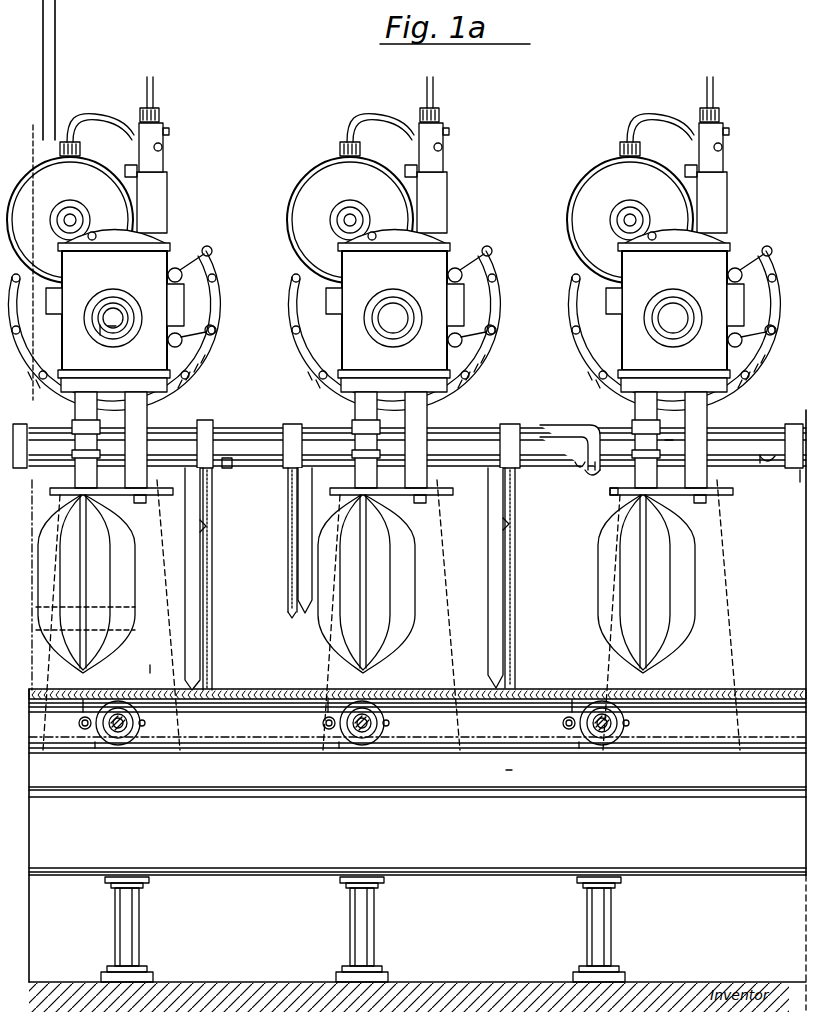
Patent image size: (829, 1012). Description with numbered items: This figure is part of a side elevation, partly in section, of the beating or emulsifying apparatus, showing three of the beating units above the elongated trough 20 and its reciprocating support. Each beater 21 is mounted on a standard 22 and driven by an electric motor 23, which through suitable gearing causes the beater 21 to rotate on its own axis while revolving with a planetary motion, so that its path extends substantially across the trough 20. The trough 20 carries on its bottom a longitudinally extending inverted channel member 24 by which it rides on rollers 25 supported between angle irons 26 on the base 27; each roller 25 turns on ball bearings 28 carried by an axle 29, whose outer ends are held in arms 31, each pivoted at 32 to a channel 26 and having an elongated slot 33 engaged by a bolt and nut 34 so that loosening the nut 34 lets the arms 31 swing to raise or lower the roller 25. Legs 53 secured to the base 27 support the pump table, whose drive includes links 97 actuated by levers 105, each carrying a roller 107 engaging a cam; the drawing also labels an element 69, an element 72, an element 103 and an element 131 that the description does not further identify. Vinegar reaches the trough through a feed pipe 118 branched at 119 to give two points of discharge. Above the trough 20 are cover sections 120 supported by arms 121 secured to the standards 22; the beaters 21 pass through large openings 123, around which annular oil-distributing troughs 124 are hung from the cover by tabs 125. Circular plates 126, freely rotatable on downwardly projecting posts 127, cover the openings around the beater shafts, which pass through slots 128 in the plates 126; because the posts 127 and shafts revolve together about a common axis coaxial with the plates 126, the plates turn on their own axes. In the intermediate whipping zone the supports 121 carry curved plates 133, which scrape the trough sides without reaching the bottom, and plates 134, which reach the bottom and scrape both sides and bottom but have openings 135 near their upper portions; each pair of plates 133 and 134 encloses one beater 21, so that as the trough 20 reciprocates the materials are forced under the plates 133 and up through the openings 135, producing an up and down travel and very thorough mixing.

The trough 20 is at (417, 711).
The beaters 21 is at (107, 593).
The standards 22 is at (183, 655).
The electric motors 23 is at (293, 222).
The inverted channel member 24 is at (523, 707).
The rollers 25 is at (96, 215).
The angle irons 26 is at (238, 733).
The base 27 is at (510, 772).
The ball bearings 28 is at (123, 735).
The axles 29 is at (127, 730).
The arms 31 is at (97, 743).
The pivot 32 is at (146, 723).
The elongated slot 33 is at (83, 742).
The bolt and nut 34 is at (79, 723).
The legs 53 is at (148, 667).
The standard 69 is at (50, 102).
The guide bar 72 is at (48, 680).
The links 97 is at (102, 336).
The sleeve 103 is at (114, 332).
The levers 105 is at (120, 306).
The roller 107 is at (122, 300).
The feed pipe 118 is at (262, 428).
The branch 119 is at (672, 438).
The cover sections 120 is at (228, 468).
The arms 121 is at (90, 455).
The openings 123 is at (75, 462).
The annular troughs 124 is at (612, 487).
The tabs 125 is at (590, 450).
The circular plates 126 is at (160, 495).
The posts 127 is at (133, 417).
The slots 128 is at (616, 497).
The fitting 131 is at (802, 483).
The curved plates 133 is at (287, 606).
The plates 134 is at (207, 588).
The openings 135 is at (203, 518).